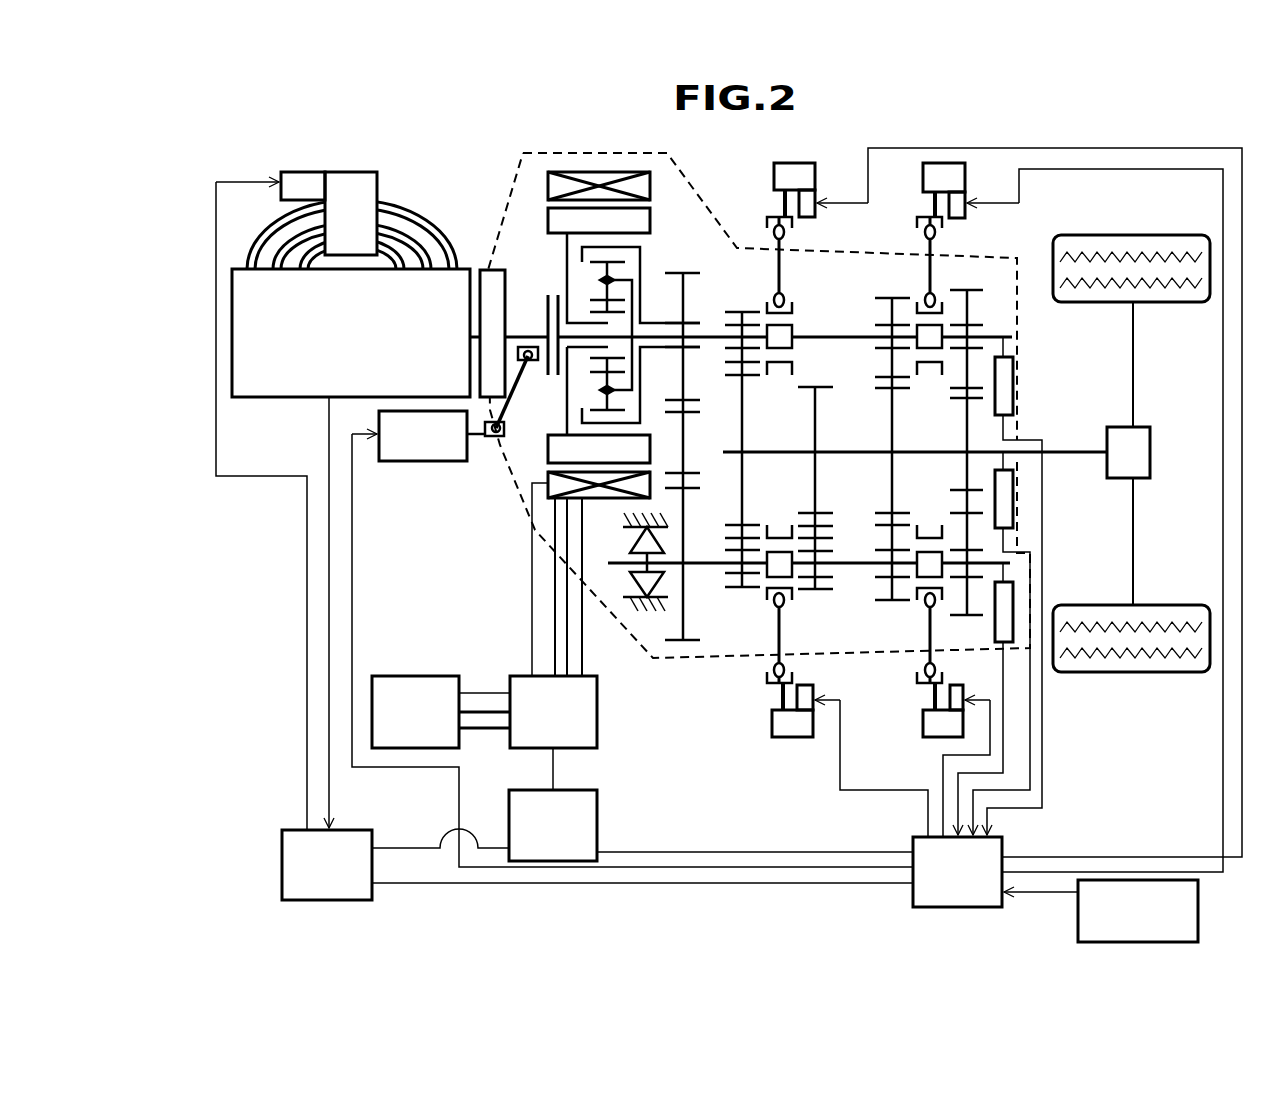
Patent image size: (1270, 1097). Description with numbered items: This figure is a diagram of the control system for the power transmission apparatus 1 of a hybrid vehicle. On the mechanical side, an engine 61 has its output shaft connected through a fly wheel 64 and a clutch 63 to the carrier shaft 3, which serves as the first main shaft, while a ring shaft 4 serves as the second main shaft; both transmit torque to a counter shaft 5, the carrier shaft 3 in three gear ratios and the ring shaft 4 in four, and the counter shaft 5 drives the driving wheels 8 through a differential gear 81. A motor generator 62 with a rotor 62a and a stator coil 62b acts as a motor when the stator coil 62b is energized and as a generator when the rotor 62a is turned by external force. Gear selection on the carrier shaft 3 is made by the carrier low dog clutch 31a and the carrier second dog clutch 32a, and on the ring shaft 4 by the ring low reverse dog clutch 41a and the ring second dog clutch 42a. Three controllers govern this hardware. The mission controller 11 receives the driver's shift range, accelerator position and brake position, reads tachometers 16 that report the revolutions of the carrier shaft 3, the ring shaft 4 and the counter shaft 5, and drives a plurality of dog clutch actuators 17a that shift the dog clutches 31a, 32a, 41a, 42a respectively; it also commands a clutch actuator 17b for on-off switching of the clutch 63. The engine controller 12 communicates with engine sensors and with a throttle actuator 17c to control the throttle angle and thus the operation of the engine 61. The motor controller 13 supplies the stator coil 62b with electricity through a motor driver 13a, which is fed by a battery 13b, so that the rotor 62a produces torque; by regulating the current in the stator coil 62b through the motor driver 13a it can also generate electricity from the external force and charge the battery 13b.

The power transmission apparatus 1 is at (503, 193).
The carrier shaft 3 is at (1004, 334).
The ring shaft 4 is at (991, 555).
The counter shaft 5 is at (1065, 447).
The driving wheels 8 is at (1130, 236).
The mission controller 11 is at (1002, 840).
The engine controller 12 is at (372, 868).
The motor controller 13 is at (598, 822).
The motor driver 13a is at (598, 710).
The battery 13b is at (418, 676).
The tachometers 16 is at (1014, 380).
The dog clutch actuators 17a is at (776, 165).
The clutch actuator 17b is at (418, 463).
The throttle actuator 17c is at (303, 175).
The carrier low dog clutch 31a is at (794, 307).
The carrier second dog clutch 32a is at (940, 306).
The ring low reverse dog clutch 41a is at (790, 598).
The ring second dog clutch 42a is at (933, 598).
The engine 61 is at (412, 347).
The motor generator 62 is at (625, 342).
The rotor 62a is at (619, 233).
The stator coil 62b is at (651, 190).
The clutch 63 is at (544, 310).
The fly wheel 64 is at (509, 333).
The differential gear 81 is at (1115, 463).